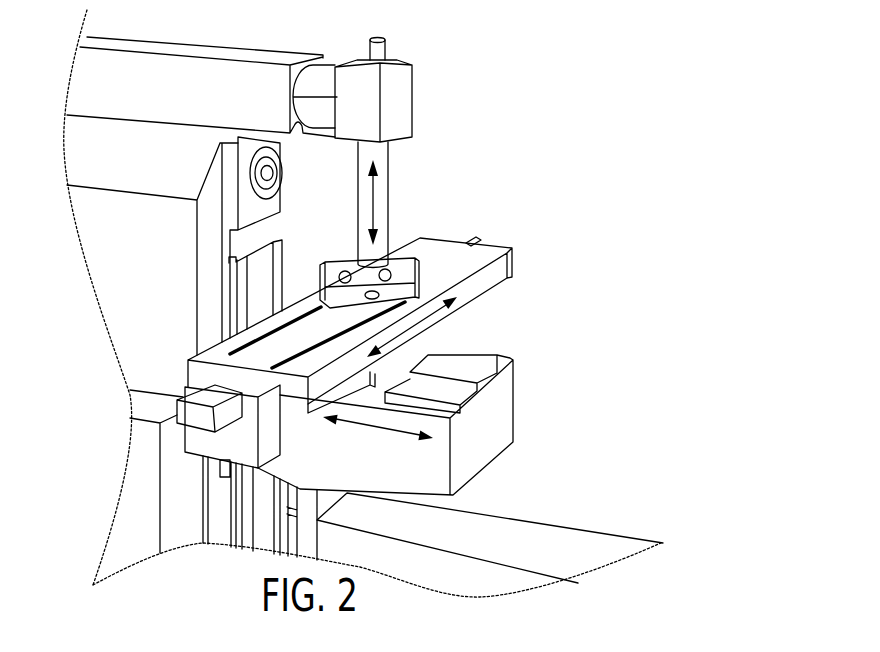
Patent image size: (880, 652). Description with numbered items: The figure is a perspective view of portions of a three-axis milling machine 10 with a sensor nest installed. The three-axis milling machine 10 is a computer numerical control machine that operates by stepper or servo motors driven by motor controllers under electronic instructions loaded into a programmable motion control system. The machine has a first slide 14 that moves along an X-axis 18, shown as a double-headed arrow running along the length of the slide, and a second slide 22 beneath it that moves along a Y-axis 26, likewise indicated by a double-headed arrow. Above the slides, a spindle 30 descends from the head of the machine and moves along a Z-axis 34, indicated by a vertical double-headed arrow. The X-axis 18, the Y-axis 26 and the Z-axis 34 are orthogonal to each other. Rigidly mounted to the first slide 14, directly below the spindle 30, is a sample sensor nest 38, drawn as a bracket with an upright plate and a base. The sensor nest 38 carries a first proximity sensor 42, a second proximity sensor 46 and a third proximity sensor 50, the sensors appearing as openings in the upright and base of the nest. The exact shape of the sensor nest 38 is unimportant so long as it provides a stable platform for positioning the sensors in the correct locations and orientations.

The three-axis milling machine 10 is at (519, 78).
The first slide 14 is at (500, 284).
The X-axis 18 is at (440, 312).
The second slide 22 is at (375, 386).
The Y-axis 26 is at (358, 420).
The spindle 30 is at (390, 158).
The Z-axis 34 is at (374, 186).
The sensor nest 38 is at (392, 254).
The first proximity sensor 42 is at (437, 244).
The second proximity sensor 46 is at (343, 272).
The third proximity sensor 50 is at (370, 291).